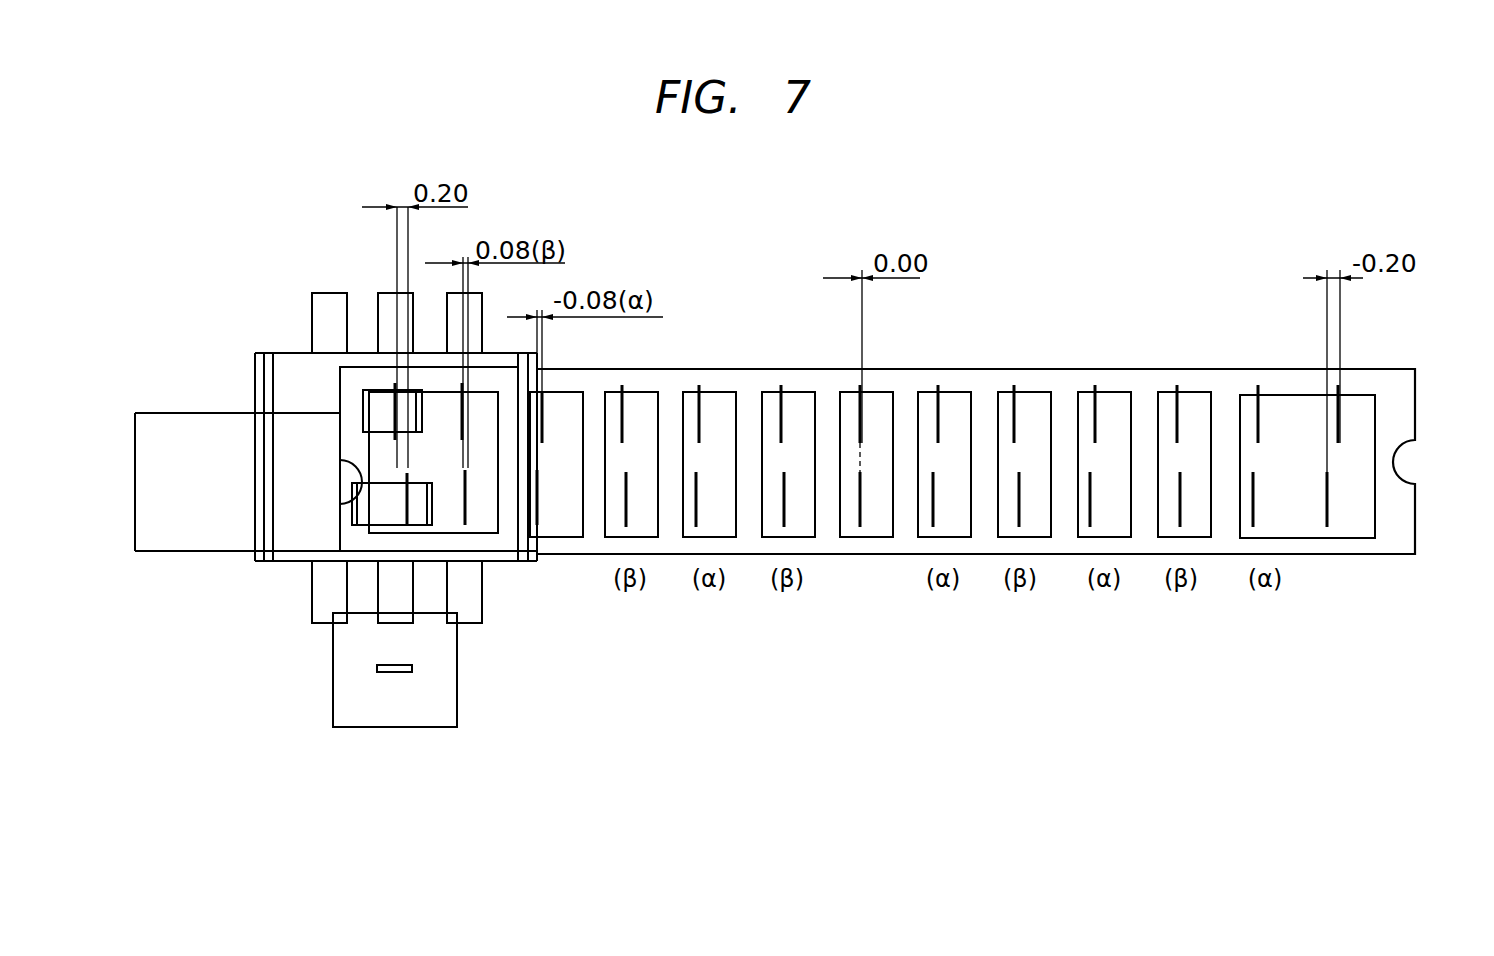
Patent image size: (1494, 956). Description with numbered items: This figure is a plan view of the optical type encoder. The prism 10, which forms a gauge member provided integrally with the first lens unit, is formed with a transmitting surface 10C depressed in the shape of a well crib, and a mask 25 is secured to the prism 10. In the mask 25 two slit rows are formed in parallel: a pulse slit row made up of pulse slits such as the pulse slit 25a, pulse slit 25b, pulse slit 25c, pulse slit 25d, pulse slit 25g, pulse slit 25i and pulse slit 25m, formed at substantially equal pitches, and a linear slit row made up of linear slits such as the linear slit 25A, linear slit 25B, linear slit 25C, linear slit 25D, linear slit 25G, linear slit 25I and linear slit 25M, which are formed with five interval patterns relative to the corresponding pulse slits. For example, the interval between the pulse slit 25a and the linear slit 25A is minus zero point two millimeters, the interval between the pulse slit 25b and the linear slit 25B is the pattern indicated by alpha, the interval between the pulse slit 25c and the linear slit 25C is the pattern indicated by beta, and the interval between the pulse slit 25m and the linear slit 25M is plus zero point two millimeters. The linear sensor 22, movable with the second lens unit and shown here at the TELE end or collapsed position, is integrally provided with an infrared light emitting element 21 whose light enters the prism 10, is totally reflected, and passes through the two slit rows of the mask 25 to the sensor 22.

The prism 10 is at (1405, 498).
The transmitting surface 10C is at (1334, 483).
The infrared light emitting element 21 is at (443, 703).
The linear sensor 22 is at (297, 362).
The mask 25 is at (985, 380).
The pulse slit 25m is at (400, 405).
The linear slit 25M is at (405, 500).
The pulse slit 25i is at (700, 413).
The linear slit 25I is at (700, 505).
The pulse slit 25g is at (862, 413).
The linear slit 25G is at (865, 505).
The pulse slit 25d is at (1095, 413).
The linear slit 25D is at (1090, 505).
The pulse slit 25c is at (1177, 413).
The linear slit 25C is at (1180, 505).
The pulse slit 25b is at (1258, 413).
The linear slit 25B is at (1253, 505).
The pulse slit 25a is at (1340, 420).
The linear slit 25A is at (1330, 505).